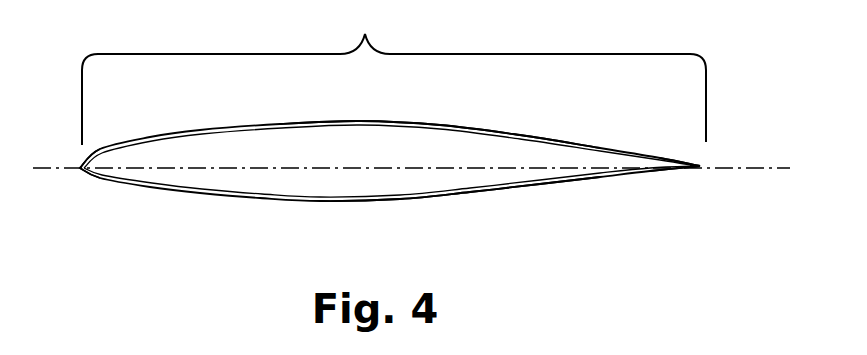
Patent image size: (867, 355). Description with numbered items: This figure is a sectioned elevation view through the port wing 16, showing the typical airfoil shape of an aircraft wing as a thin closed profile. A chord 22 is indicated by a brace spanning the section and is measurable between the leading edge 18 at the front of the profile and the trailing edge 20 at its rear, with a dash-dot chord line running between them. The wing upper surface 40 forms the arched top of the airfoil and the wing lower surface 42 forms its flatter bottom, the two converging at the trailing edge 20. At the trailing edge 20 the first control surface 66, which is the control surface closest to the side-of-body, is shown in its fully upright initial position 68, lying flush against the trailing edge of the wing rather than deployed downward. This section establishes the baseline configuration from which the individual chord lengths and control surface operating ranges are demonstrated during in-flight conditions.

The port wing 16 is at (152, 187).
The leading edge 18 is at (82, 166).
The trailing edge 20 is at (698, 168).
The chord 22 is at (394, 76).
The wing upper surface 40 is at (475, 128).
The wing lower surface 42 is at (476, 192).
The first control surface 66 is at (695, 166).
The initial position 68 is at (700, 167).